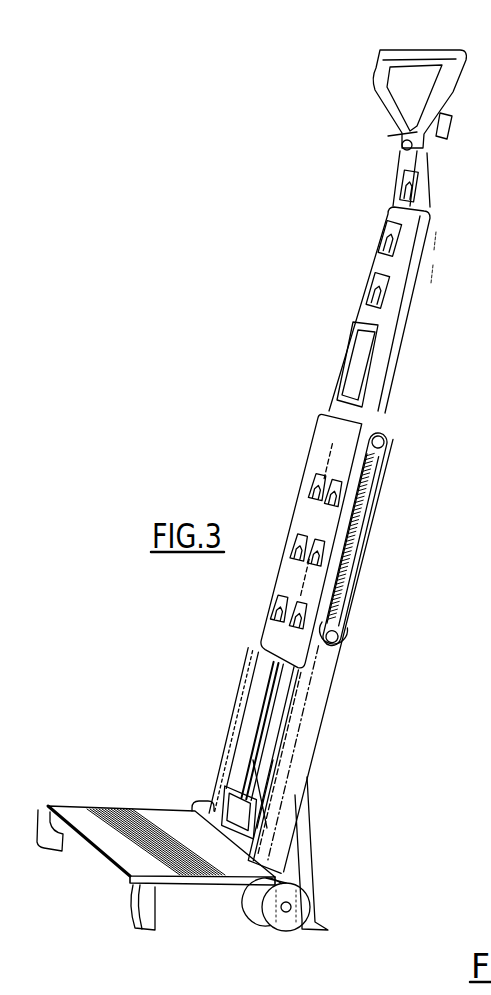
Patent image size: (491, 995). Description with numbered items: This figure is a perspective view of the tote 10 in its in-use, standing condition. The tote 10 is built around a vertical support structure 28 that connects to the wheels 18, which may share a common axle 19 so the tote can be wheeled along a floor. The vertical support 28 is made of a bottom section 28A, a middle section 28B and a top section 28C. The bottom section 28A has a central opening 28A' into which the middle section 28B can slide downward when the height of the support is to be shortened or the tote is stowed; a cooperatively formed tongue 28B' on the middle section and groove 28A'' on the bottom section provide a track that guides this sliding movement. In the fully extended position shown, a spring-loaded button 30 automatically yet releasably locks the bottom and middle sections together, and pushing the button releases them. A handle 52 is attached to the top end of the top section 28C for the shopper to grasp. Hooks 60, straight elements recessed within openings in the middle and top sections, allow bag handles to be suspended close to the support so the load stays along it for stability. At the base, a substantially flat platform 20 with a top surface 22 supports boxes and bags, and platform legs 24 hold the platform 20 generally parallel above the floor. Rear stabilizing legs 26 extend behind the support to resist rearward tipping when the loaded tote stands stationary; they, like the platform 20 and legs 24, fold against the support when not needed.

The tote 10 is at (323, 234).
The handle 52 is at (424, 50).
The vertical support structure 28 is at (340, 664).
The top section 28C is at (403, 300).
The middle section 28B is at (327, 643).
The tongue 28B' is at (387, 539).
The bottom section 28A is at (321, 757).
The central opening 28A' is at (237, 763).
The groove 28A'' is at (240, 743).
The hooks 60 is at (385, 287).
The spring-loaded button 30 is at (338, 637).
The rear stabilizing legs 26 is at (306, 843).
The platform 20 is at (95, 806).
The top surface 22 is at (162, 818).
The platform legs 24 is at (52, 843).
The wheels 18 is at (203, 818).
The axle 19 is at (290, 907).